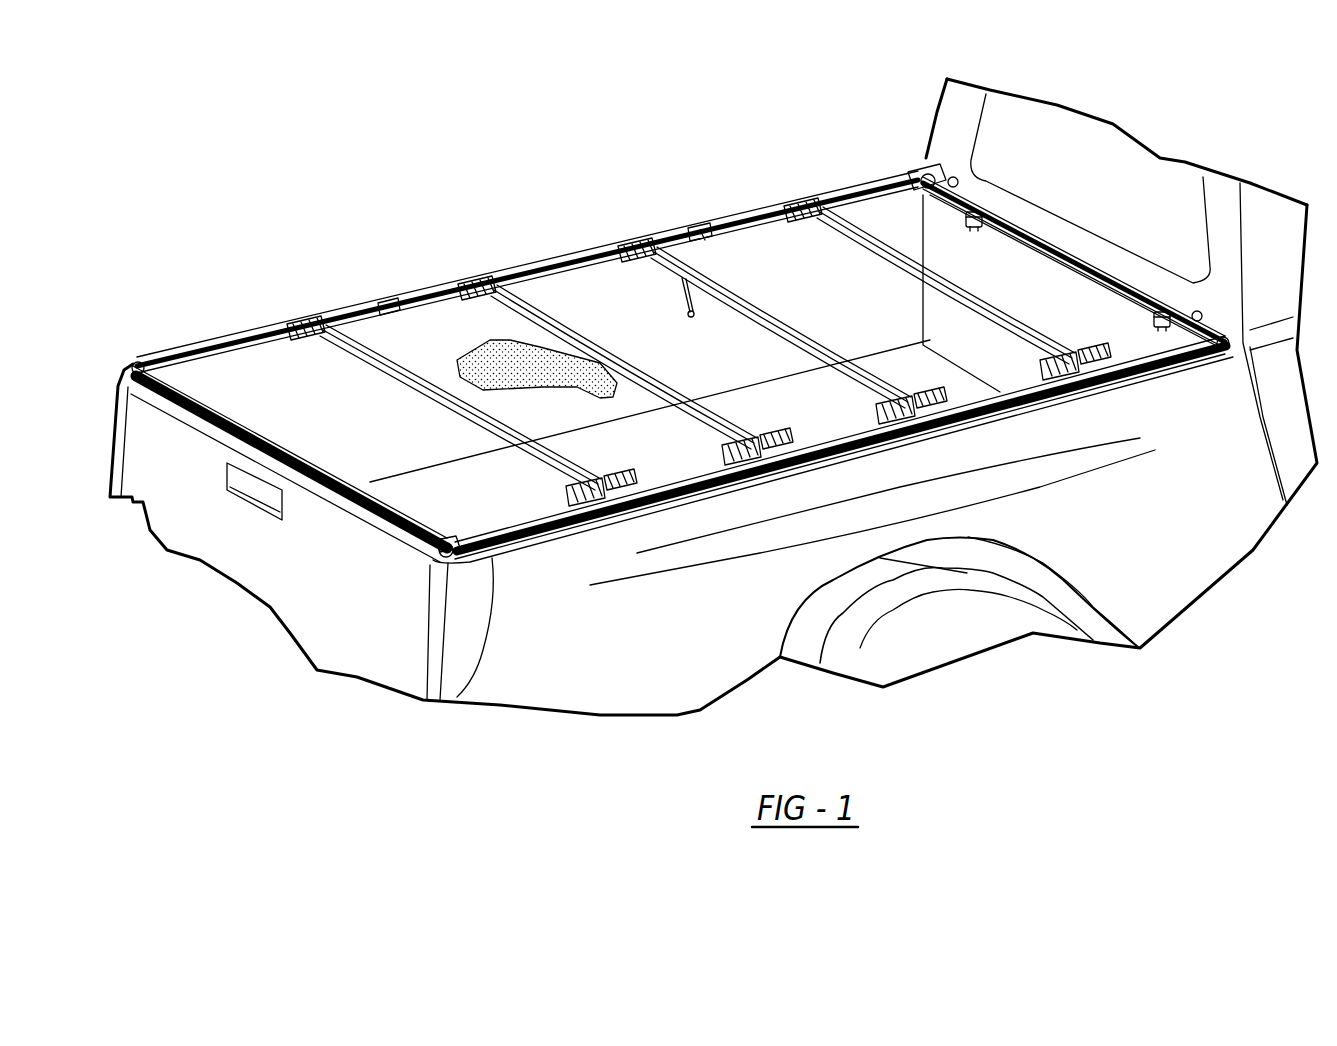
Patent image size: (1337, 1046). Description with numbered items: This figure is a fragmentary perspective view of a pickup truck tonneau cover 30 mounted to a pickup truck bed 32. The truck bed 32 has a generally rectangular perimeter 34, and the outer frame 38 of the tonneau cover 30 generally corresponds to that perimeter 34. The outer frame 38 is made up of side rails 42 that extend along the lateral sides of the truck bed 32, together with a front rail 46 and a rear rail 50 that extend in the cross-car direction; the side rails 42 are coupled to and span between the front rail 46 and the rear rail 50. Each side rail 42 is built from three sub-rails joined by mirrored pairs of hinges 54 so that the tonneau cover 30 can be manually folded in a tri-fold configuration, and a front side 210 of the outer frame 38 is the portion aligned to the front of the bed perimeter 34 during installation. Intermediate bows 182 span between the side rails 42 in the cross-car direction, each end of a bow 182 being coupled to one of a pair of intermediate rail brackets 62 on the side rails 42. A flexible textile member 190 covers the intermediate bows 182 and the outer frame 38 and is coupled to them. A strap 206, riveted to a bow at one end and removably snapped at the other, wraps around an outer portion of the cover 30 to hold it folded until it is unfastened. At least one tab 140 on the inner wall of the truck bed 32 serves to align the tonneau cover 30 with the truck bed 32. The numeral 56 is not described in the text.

The pickup truck tonneau cover 30 is at (581, 226).
The pickup truck bed 32 is at (297, 722).
The perimeter 34 is at (533, 547).
The outer frame 38 is at (943, 168).
The side rails 42 is at (520, 267).
The front rail 46 is at (1037, 233).
The rear rail 50 is at (197, 390).
The hinges 54 is at (693, 227).
The rail member 56 is at (413, 294).
The intermediate rail brackets 62 is at (320, 318).
The tab 140 is at (997, 217).
The intermediate bows 182 is at (453, 399).
The flexible textile member 190 is at (573, 383).
The strap 206 is at (682, 300).
The front side 210 is at (1070, 253).